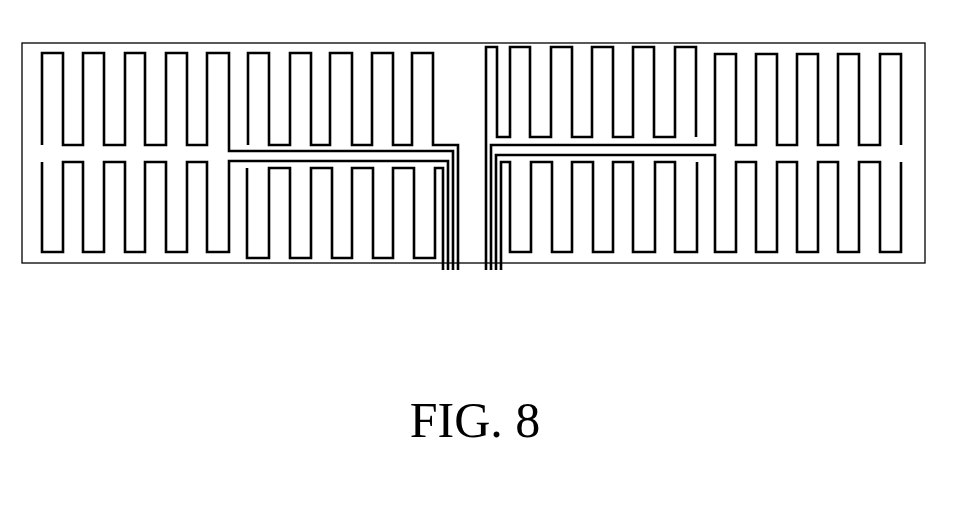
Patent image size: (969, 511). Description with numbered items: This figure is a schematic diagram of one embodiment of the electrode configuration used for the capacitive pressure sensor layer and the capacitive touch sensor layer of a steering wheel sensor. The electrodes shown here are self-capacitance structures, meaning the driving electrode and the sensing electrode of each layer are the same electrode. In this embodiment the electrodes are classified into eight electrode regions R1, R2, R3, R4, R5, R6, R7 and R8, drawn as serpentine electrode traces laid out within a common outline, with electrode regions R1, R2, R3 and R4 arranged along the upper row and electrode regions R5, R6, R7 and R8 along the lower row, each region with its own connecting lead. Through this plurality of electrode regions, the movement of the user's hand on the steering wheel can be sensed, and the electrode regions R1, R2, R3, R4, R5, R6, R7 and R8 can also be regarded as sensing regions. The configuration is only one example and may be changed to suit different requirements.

The electrode region R1 is at (42, 31).
The electrode region R2 is at (238, 31).
The electrode region R3 is at (485, 31).
The electrode region R4 is at (707, 31).
The electrode region R5 is at (42, 286).
The electrode region R6 is at (238, 286).
The electrode region R7 is at (508, 286).
The electrode region R8 is at (707, 286).